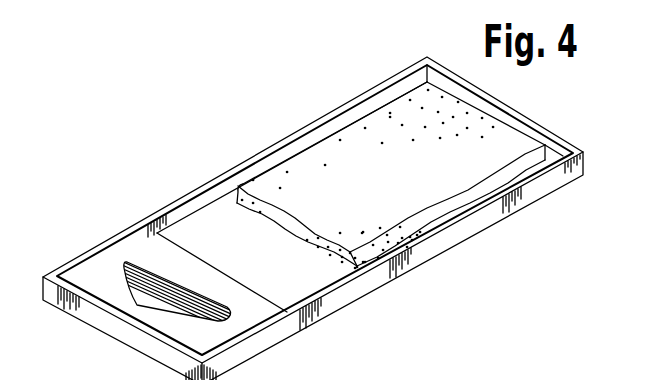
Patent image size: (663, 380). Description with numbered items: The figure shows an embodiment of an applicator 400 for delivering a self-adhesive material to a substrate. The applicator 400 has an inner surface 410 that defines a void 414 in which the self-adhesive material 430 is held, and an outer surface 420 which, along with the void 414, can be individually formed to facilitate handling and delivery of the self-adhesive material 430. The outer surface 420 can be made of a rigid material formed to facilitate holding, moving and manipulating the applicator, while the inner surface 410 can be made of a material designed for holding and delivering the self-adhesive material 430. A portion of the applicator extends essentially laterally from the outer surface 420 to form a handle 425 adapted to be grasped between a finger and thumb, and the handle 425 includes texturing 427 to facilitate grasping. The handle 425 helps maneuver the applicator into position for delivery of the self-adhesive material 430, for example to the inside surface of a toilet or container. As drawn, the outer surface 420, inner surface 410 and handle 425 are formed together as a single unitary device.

The applicator 400 is at (251, 96).
The inner surface 410 is at (225, 250).
The void 414 is at (298, 281).
The outer surface 420 is at (473, 225).
The handle 425 is at (253, 353).
The texturing 427 is at (137, 262).
The self-adhesive material 430 is at (508, 153).